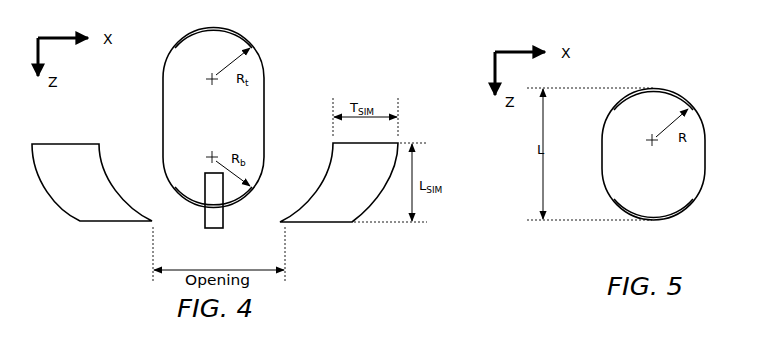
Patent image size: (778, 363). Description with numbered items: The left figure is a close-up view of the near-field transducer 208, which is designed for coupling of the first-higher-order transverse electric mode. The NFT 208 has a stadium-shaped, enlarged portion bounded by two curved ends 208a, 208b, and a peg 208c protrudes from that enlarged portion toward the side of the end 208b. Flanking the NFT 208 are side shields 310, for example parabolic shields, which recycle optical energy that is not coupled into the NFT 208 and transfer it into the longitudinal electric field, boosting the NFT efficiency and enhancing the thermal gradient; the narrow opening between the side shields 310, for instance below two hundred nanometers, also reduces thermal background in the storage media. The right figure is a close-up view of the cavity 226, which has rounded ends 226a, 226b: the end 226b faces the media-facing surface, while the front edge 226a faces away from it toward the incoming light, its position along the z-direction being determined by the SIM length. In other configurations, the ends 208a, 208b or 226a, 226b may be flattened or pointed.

In FIG. 4, the near-field transducer 208 is at (163, 87).
In FIG. 4, the curved end of enlarged portion 208a is at (265, 62).
In FIG. 4, the curved end of enlarged portion 208b is at (238, 200).
In FIG. 4, the peg 208c is at (205, 229).
In FIG. 4, the side shields 310 is at (98, 221).
In FIG. 5, the cavity 226 is at (702, 180).
In FIG. 5, the front edge of cavity 226a is at (675, 95).
In FIG. 5, the end of cavity 226b is at (670, 217).